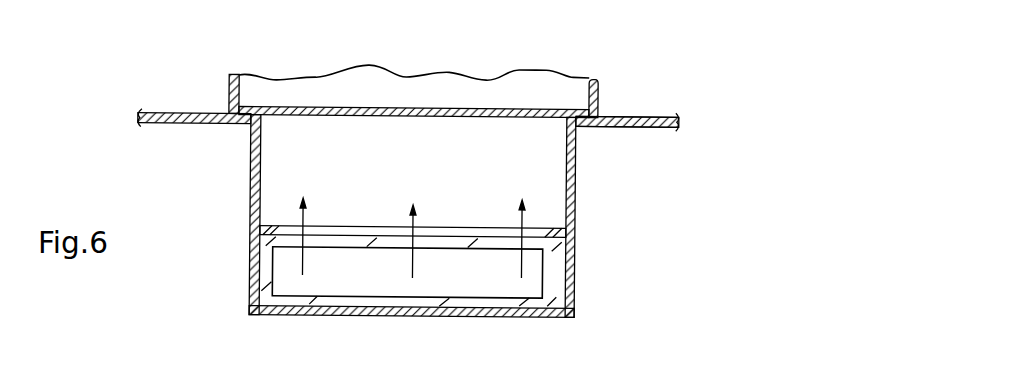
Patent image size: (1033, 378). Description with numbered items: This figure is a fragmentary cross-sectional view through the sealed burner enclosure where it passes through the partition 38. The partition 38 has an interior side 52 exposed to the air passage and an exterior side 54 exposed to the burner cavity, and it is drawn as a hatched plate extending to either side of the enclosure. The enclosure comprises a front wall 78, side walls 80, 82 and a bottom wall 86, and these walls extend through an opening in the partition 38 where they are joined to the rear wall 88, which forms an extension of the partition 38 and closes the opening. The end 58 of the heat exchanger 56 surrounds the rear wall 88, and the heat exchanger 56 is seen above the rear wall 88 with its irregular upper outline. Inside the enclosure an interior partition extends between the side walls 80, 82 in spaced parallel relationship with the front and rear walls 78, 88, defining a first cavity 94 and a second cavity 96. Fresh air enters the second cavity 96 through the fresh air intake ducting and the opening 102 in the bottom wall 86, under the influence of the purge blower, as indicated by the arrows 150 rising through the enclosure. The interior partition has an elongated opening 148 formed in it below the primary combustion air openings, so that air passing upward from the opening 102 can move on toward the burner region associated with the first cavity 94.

The partition 38 is at (670, 108).
The interior side 52 is at (631, 117).
The exterior side 54 is at (643, 128).
The heat exchanger 56 is at (465, 70).
The end of heat exchanger 58 is at (227, 92).
The rear wall 88 is at (553, 112).
The side wall 82 is at (250, 153).
The side wall 80 is at (576, 200).
The front wall 78 is at (540, 320).
The first cavity 94 is at (542, 163).
The second cavity 96 is at (566, 287).
The elongated opening 148 is at (332, 232).
The opening 102 is at (355, 272).
The bottom wall 86 is at (463, 300).
The arrows 150 is at (307, 210).